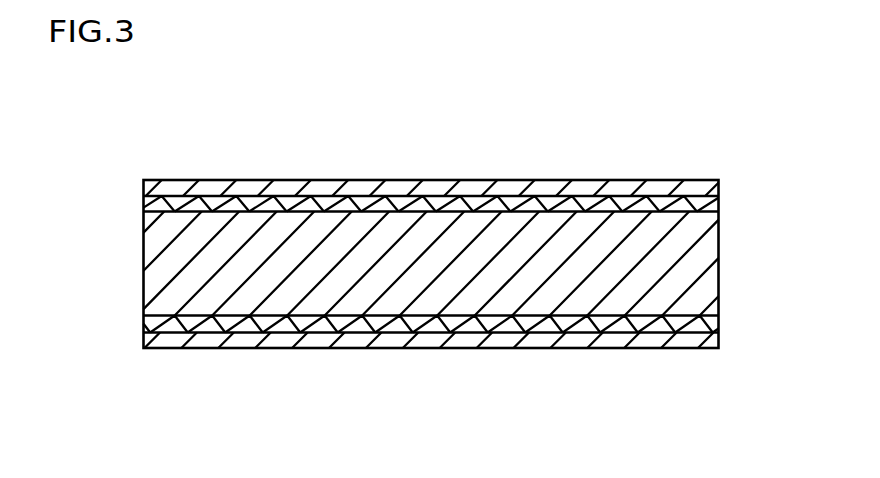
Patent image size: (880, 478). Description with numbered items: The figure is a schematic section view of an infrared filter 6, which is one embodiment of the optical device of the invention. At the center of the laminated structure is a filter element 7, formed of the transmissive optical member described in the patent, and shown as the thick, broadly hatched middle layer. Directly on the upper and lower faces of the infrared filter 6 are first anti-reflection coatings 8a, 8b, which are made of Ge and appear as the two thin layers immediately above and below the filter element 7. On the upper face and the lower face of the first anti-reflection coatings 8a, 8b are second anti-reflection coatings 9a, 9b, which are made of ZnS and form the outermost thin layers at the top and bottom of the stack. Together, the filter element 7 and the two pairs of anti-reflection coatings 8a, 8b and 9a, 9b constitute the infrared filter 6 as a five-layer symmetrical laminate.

The infrared filter 6 is at (439, 141).
The filter element 7 is at (718, 268).
The first anti-reflection coating 8a is at (718, 203).
The first anti-reflection coating 8b is at (718, 327).
The second anti-reflection coating 9a is at (691, 180).
The second anti-reflection coating 9b is at (718, 343).